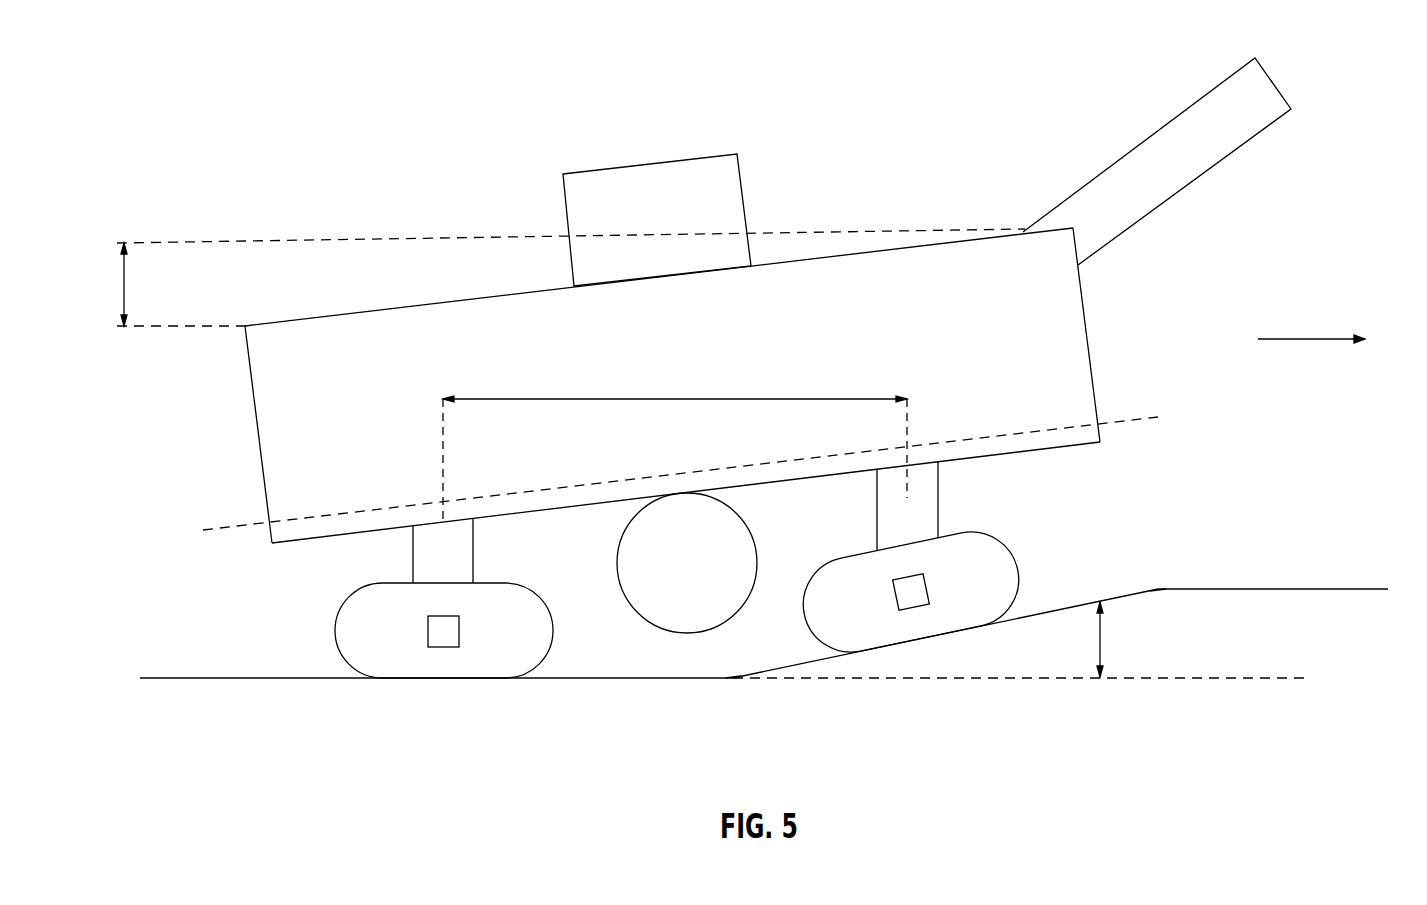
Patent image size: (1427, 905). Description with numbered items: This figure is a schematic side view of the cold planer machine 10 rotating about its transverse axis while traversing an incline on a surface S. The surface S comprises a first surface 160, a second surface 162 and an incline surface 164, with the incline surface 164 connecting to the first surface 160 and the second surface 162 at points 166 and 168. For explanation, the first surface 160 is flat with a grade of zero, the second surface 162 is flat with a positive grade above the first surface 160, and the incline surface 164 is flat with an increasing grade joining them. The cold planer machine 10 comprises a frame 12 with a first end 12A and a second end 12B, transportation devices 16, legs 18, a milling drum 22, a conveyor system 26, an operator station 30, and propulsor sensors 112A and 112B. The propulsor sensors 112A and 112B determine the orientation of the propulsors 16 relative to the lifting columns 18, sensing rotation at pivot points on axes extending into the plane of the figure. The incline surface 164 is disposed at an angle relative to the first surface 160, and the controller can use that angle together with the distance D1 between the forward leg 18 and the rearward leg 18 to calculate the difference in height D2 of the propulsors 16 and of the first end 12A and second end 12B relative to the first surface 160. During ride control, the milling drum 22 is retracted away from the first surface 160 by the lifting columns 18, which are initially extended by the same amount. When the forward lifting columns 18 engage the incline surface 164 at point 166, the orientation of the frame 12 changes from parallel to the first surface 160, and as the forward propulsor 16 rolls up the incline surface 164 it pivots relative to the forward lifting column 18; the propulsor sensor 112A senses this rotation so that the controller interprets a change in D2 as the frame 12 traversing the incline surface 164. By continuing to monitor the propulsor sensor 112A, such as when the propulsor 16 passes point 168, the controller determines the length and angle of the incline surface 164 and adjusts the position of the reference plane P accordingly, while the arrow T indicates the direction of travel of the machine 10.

The cold planer machine 10 is at (972, 108).
The frame 12 is at (676, 385).
The first end 12A is at (1094, 368).
The second end 12B is at (257, 433).
The transportation devices 16 is at (347, 637).
The legs 18 is at (418, 543).
The milling drum 22 is at (625, 578).
The conveyor system 26 is at (1205, 93).
The operator station 30 is at (745, 205).
The propulsor sensor 112A is at (915, 598).
The propulsor sensor 112B is at (442, 635).
The first surface 160 is at (238, 680).
The second surface 162 is at (1352, 590).
The incline surface 164 is at (1008, 623).
The point 166 is at (728, 680).
The point 168 is at (1158, 588).
The distance D1 is at (673, 398).
The difference in height D2 is at (122, 285).
The reference plane P is at (1147, 418).
The surface S is at (778, 638).
The travel direction T is at (1280, 339).